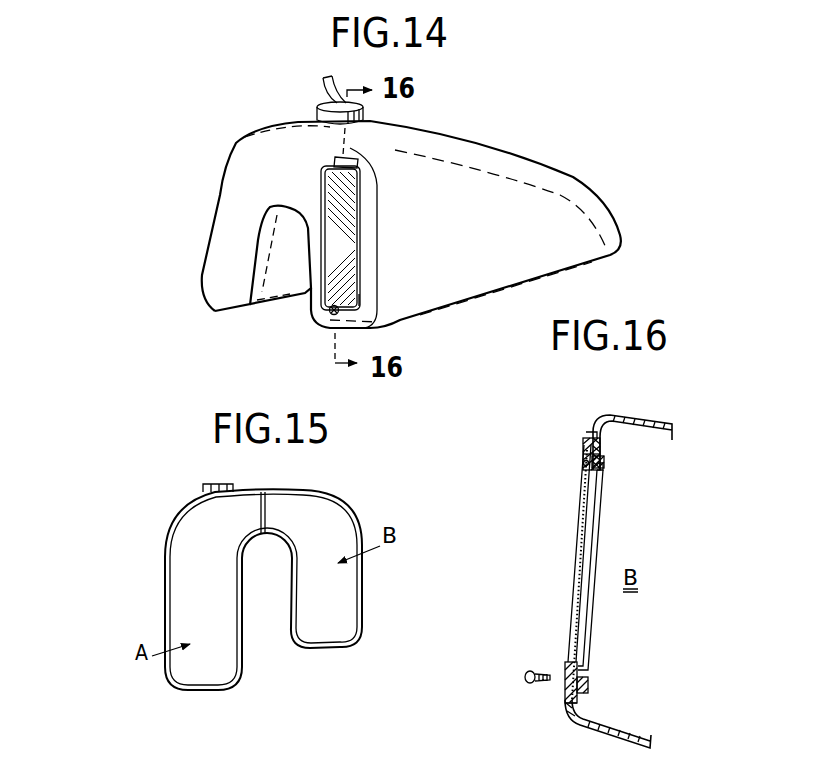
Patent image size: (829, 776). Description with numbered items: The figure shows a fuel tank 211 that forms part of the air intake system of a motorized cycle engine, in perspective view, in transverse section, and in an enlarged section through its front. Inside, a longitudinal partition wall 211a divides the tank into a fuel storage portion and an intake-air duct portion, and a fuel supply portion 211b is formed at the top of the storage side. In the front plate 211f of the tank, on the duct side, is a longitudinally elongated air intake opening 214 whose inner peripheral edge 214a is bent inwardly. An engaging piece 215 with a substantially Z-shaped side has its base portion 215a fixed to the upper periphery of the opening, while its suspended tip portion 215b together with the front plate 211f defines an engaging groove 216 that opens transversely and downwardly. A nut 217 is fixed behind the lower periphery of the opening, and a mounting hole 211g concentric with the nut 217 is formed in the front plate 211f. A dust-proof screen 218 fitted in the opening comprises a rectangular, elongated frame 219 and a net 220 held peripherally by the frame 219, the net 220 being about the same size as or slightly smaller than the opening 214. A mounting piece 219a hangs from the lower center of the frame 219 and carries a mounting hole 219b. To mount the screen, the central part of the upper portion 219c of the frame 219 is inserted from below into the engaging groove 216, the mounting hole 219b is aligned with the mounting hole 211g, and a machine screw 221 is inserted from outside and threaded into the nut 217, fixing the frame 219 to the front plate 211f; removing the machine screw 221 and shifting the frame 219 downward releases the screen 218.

In FIG. 14, the fuel tank 211 is at (487, 146).
In FIG. 15, the fuel tank 211 is at (165, 545).
In FIG. 16, the fuel tank 211 is at (664, 413).
In FIG. 15, the longitudinal partition wall 211a is at (266, 522).
In FIG. 15, the fuel supply portion 211b is at (218, 484).
In FIG. 16, the front plate 211f is at (600, 440).
In FIG. 16, the mounting hole 211g is at (586, 690).
In FIG. 16, the air intake opening 214 is at (600, 500).
In FIG. 16, the inner peripheral edge 214a is at (603, 470).
In FIG. 14, the engaging piece 215 is at (352, 160).
In FIG. 16, the engaging piece 215 is at (580, 438).
In FIG. 16, the base portion 215a is at (591, 432).
In FIG. 16, the tip portion 215b is at (582, 454).
In FIG. 16, the engaging groove 216 is at (584, 465).
In FIG. 16, the nut 217 is at (588, 680).
In FIG. 14, the dust-proof screen 218 is at (326, 269).
In FIG. 16, the dust-proof screen 218 is at (577, 597).
In FIG. 14, the frame 219 is at (360, 256).
In FIG. 14, the mounting piece 219a is at (332, 315).
In FIG. 16, the mounting piece 219a is at (569, 705).
In FIG. 16, the mounting hole 219b is at (566, 688).
In FIG. 16, the upper portion 219c is at (604, 458).
In FIG. 14, the net 220 is at (358, 212).
In FIG. 16, the net 220 is at (584, 561).
In FIG. 14, the machine screw 221 is at (354, 298).
In FIG. 16, the machine screw 221 is at (524, 677).